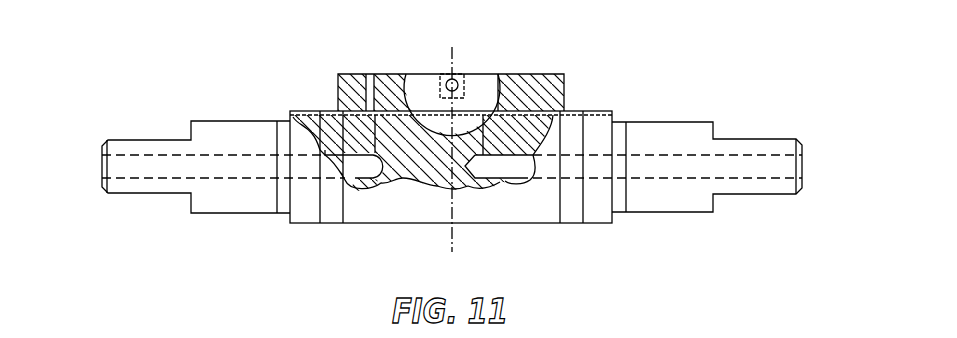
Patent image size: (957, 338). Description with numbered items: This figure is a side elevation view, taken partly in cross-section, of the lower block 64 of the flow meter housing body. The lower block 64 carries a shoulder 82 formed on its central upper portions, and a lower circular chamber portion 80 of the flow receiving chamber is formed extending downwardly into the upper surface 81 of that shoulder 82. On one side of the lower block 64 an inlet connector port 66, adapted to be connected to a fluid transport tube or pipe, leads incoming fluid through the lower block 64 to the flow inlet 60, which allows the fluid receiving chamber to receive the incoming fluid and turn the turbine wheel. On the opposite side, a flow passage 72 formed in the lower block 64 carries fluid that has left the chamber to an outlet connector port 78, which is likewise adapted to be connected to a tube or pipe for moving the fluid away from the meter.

The lower block 64 is at (252, 58).
The flow inlet 60 is at (540, 167).
The inlet connector port 66 is at (767, 195).
The flow passage 72 is at (358, 188).
The outlet connector port 78 is at (140, 140).
The lower circular chamber portion 80 is at (443, 62).
The upper surface 81 is at (528, 77).
The shoulder 82 is at (535, 103).